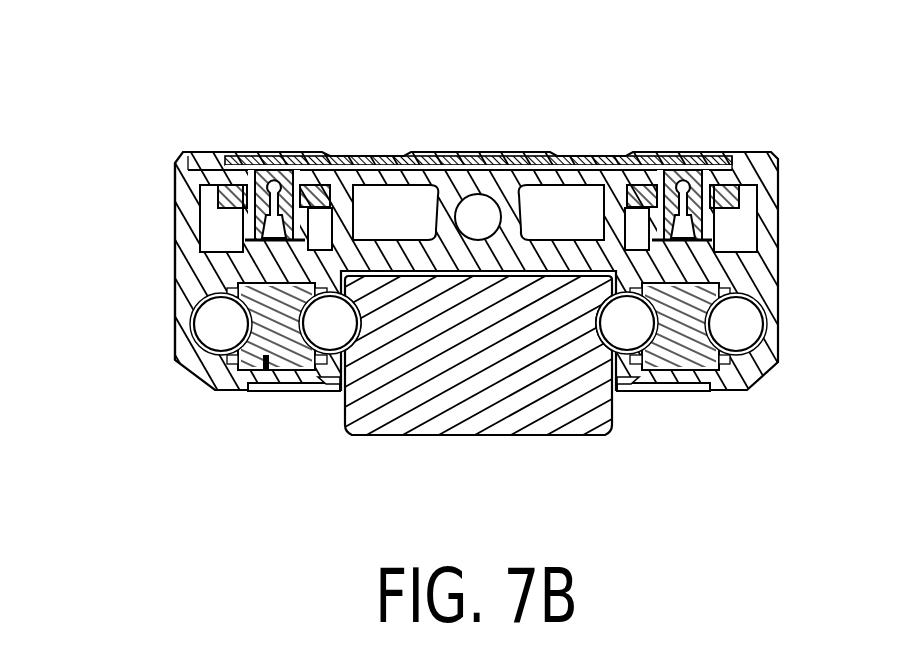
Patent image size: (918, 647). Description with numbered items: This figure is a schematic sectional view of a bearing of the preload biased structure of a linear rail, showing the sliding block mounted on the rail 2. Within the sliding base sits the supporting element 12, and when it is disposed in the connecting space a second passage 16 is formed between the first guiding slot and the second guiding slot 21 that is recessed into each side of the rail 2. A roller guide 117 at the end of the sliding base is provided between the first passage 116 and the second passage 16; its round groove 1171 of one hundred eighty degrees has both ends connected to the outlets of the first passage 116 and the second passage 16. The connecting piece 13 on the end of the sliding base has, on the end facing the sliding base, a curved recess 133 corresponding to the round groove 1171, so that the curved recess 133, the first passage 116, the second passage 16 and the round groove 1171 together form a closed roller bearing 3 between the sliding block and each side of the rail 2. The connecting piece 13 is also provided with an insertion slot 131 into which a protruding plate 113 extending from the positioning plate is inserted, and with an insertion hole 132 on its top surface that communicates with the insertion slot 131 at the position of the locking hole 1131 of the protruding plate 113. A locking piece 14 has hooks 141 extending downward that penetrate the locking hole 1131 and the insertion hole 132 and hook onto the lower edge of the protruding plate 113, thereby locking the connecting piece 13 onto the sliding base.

The rail 2 is at (623, 440).
The second guiding slot 21 is at (345, 333).
The supporting element 12 is at (481, 143).
The connecting piece 13 is at (167, 298).
The locking piece 14 is at (356, 141).
The hook 141 is at (267, 170).
The insertion slot 131 is at (222, 243).
The insertion hole 132 is at (238, 171).
The protruding plate 113 is at (225, 193).
The locking hole 1131 is at (270, 208).
The curved recess 133 is at (218, 325).
The first passage 116 is at (215, 338).
The roller guide 117 is at (297, 382).
The round groove 1171 is at (242, 334).
The roller bearing 3 is at (267, 388).
The second passage 16 is at (348, 345).